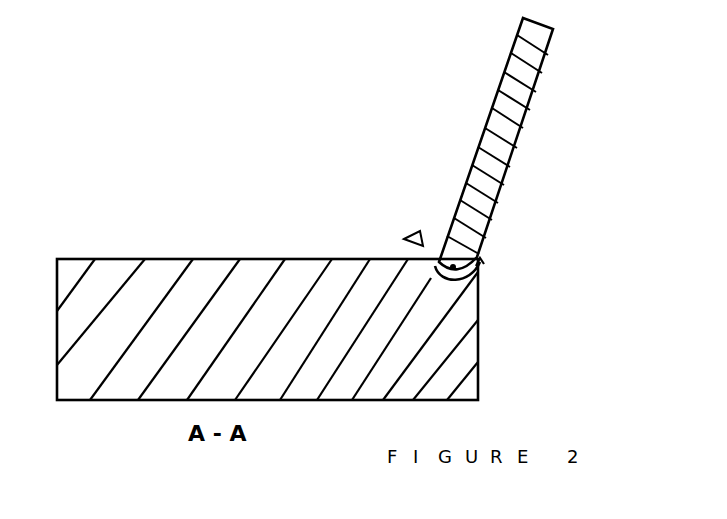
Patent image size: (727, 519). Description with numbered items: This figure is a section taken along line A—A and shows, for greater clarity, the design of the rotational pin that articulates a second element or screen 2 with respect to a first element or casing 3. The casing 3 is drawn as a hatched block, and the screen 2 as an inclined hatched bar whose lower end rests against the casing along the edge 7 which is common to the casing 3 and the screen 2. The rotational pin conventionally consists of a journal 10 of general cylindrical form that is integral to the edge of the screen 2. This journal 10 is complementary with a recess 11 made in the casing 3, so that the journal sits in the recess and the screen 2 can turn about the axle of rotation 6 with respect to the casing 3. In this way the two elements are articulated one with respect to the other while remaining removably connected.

The screen 2 is at (520, 55).
The casing 3 is at (80, 270).
The axle of rotation 6 is at (466, 263).
The edge 7 is at (412, 236).
The journal 10 is at (481, 266).
The recess 11 is at (438, 267).